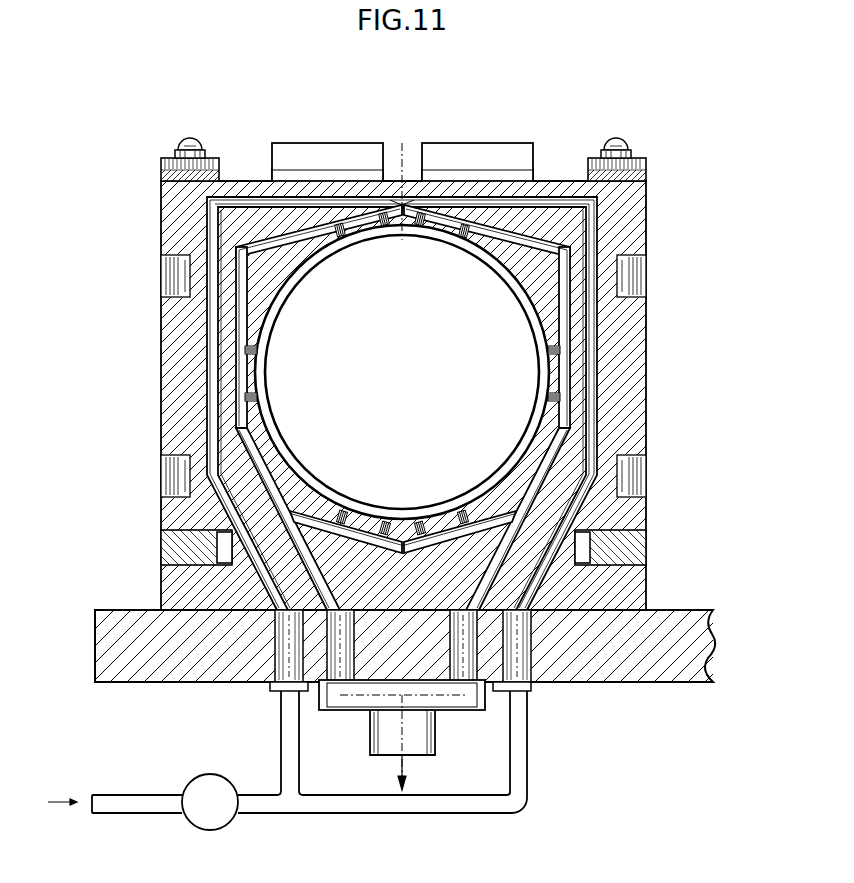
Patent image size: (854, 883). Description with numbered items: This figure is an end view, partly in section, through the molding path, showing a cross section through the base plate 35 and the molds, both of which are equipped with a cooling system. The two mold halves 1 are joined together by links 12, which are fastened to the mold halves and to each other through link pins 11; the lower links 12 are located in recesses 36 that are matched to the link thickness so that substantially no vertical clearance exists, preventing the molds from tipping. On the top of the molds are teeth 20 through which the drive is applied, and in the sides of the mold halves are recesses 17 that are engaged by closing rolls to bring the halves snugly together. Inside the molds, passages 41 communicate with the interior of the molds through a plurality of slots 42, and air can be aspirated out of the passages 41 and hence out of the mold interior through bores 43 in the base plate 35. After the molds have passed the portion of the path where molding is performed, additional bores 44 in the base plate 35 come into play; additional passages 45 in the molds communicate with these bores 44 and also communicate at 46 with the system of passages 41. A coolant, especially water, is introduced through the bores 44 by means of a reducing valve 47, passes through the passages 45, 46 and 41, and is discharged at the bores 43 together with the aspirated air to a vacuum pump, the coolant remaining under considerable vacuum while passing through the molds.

The mold half 1 is at (178, 228).
The link pin 11 is at (190, 145).
The link 12 is at (172, 168).
The recess 17 is at (172, 278).
The teeth 20 is at (302, 150).
The base plate 35 is at (665, 682).
The recess 36 is at (224, 558).
The passage 41 is at (275, 237).
The slot 42 is at (425, 222).
The bore 43 is at (460, 650).
The additional bore 44 is at (295, 688).
The additional passage 45 is at (212, 376).
The communication point 46 is at (420, 208).
The reducing valve 47 is at (197, 830).